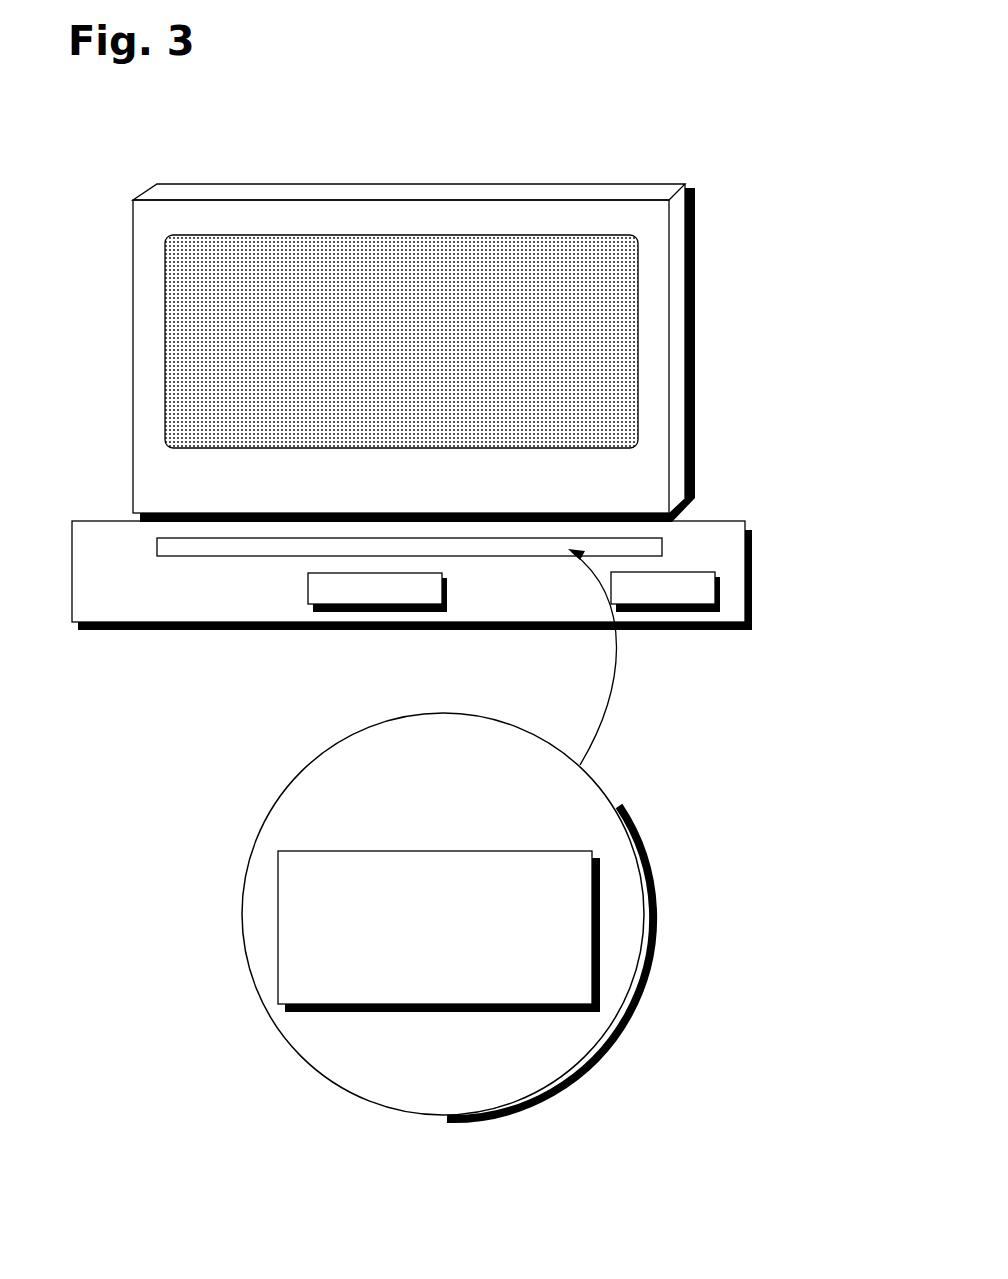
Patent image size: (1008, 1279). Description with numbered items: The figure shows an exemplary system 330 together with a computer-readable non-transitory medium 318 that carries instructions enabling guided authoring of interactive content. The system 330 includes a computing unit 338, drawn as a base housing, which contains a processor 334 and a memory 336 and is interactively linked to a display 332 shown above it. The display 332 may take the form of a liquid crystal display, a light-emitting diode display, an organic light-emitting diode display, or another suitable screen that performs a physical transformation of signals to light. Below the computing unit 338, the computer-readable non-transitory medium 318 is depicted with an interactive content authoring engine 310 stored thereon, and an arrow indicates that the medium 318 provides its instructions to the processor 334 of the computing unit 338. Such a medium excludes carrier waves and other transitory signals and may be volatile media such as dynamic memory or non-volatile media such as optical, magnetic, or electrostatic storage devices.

The system 330 is at (800, 97).
The display 332 is at (492, 184).
The processor 334 is at (445, 590).
The memory 336 is at (685, 572).
The computing unit 338 is at (753, 575).
The computer-readable non-transitory medium 318 is at (240, 913).
The interactive content authoring engine 310 is at (453, 1012).